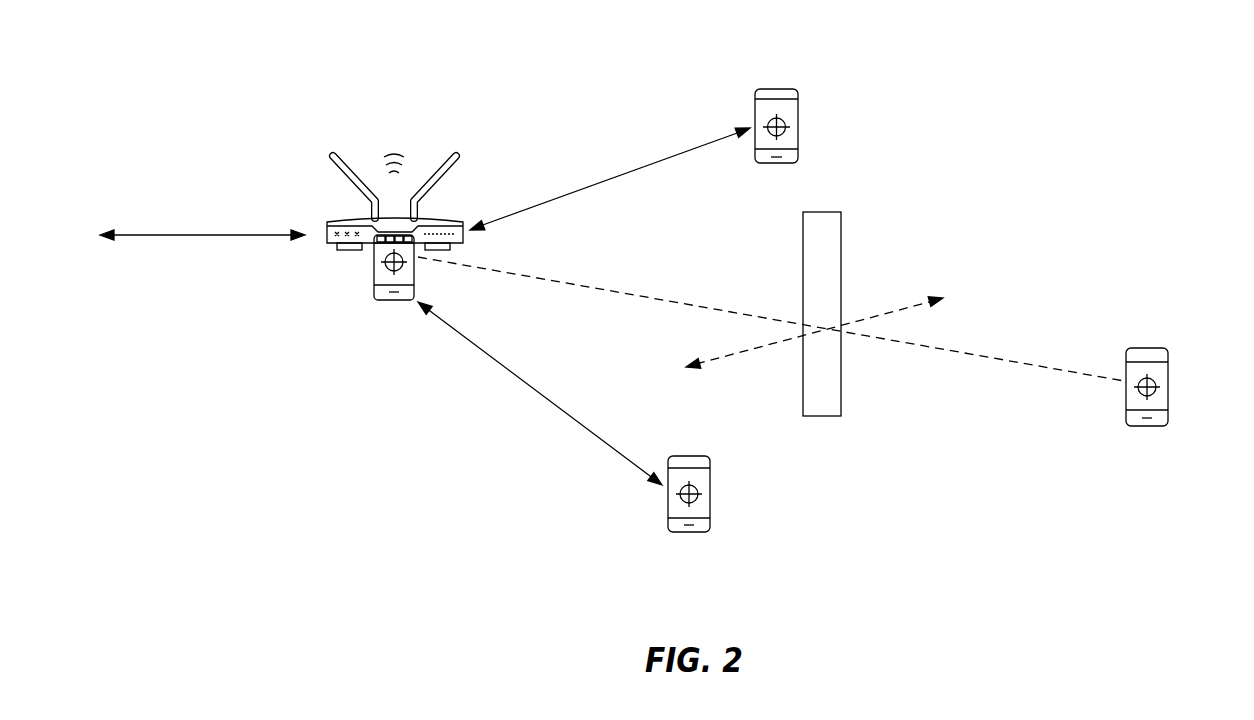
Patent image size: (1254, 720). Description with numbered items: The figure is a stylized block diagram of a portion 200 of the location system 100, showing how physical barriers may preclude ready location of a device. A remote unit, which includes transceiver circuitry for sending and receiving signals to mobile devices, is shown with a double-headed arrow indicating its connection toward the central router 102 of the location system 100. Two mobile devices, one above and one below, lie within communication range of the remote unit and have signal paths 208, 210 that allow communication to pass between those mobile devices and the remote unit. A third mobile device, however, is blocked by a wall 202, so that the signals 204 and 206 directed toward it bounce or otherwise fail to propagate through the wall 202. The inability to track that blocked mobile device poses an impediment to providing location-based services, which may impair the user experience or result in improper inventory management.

The location system 100 is at (238, 163).
The portion 200 is at (1084, 102).
The central router 102 is at (180, 238).
The wall 202 is at (843, 245).
The signal 204 is at (720, 308).
The signal 206 is at (918, 347).
The signal path 208 is at (603, 437).
The signal path 210 is at (615, 178).